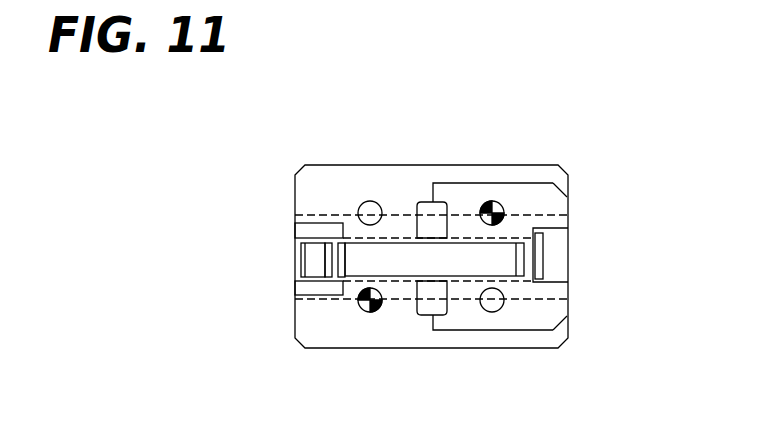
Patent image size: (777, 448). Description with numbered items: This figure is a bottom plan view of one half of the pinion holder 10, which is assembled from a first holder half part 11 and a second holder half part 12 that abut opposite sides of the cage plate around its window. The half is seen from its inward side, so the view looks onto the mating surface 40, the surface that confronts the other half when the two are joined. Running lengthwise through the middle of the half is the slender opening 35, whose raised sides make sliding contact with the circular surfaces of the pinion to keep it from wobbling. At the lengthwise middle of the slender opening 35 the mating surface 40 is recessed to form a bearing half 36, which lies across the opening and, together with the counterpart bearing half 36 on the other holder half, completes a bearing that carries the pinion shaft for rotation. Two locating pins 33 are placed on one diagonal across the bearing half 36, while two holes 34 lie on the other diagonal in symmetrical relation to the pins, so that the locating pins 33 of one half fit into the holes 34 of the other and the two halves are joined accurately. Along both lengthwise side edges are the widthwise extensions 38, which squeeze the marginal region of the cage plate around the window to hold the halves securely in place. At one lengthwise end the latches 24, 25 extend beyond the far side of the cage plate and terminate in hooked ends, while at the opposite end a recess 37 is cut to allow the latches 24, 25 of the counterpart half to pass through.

The pinion holder 10 is at (500, 229).
The first holder half part 11 is at (431, 256).
The second holder half part 12 is at (560, 158).
The latch 24 is at (264, 262).
The latch 25 is at (317, 253).
The locating pin 33 is at (494, 210).
The hole 34 is at (370, 211).
The slender opening 35 is at (497, 259).
The bearing half 36 is at (427, 210).
The recess 37 is at (546, 268).
The widthwise extension 38 is at (457, 180).
The mating surface 40 is at (478, 178).